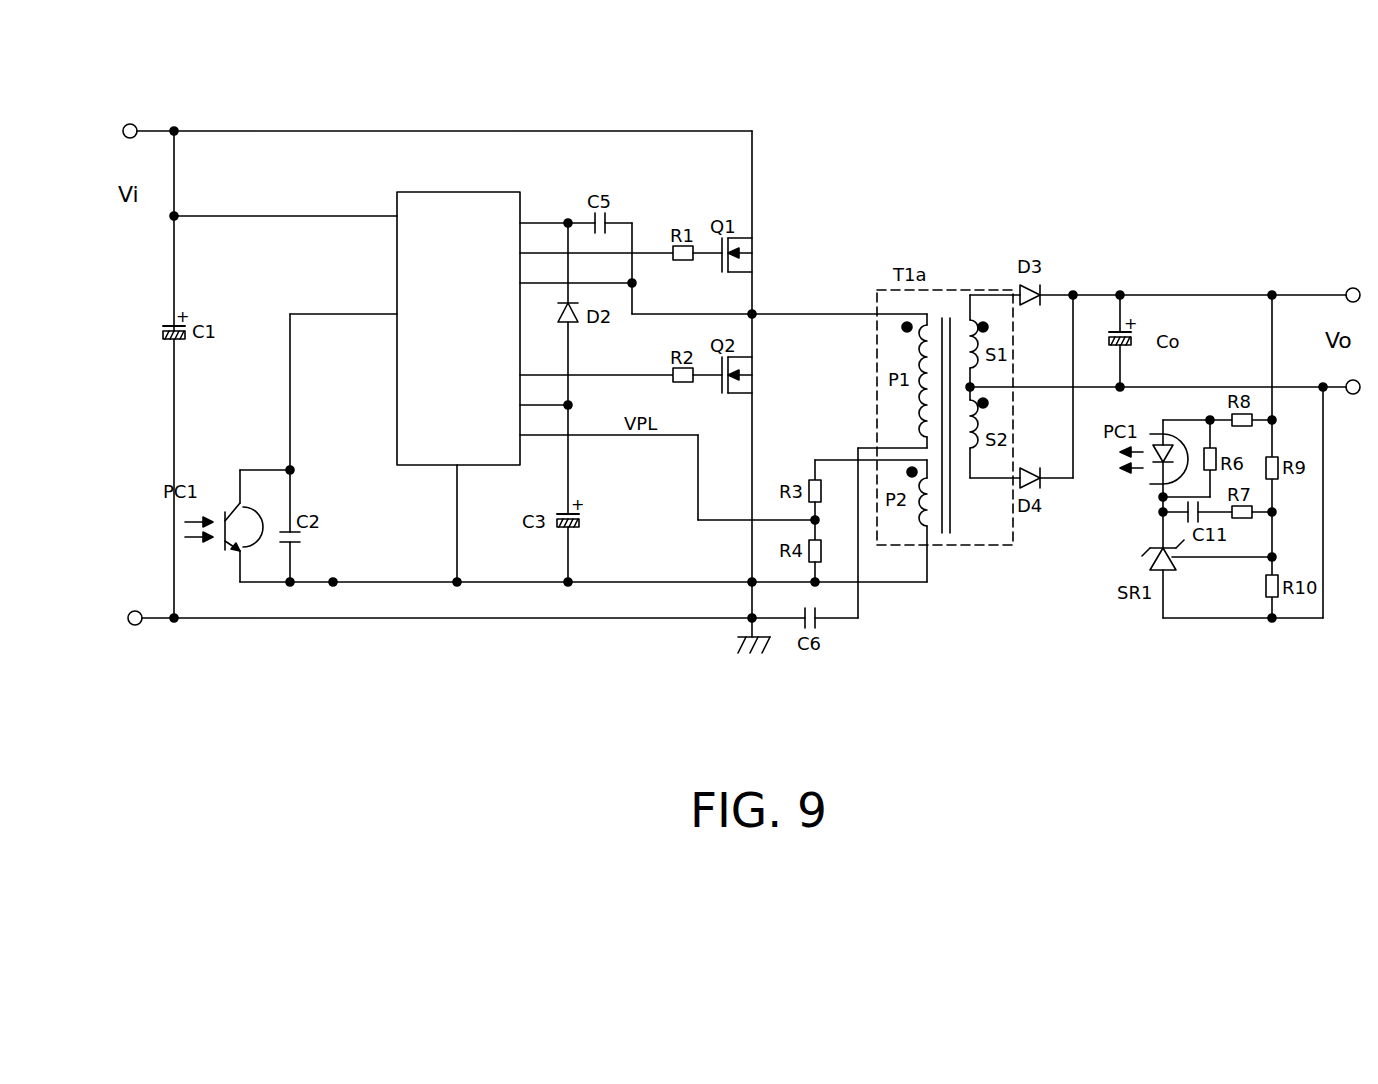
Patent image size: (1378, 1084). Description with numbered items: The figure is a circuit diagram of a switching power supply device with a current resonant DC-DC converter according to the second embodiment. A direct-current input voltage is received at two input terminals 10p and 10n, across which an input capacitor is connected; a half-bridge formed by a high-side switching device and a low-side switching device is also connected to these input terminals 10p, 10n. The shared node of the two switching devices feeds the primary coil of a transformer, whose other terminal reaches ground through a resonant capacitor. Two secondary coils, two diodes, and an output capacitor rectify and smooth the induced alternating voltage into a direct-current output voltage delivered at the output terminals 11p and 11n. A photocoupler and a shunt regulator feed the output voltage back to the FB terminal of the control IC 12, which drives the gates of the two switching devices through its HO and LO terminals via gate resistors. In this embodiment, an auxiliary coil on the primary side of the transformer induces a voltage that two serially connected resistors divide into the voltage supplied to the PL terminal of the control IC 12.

The control IC 12 is at (498, 192).
The input terminal 10p is at (130, 124).
The input terminal 10n is at (135, 611).
The output terminal 11p is at (1352, 288).
The output terminal 11n is at (1353, 394).